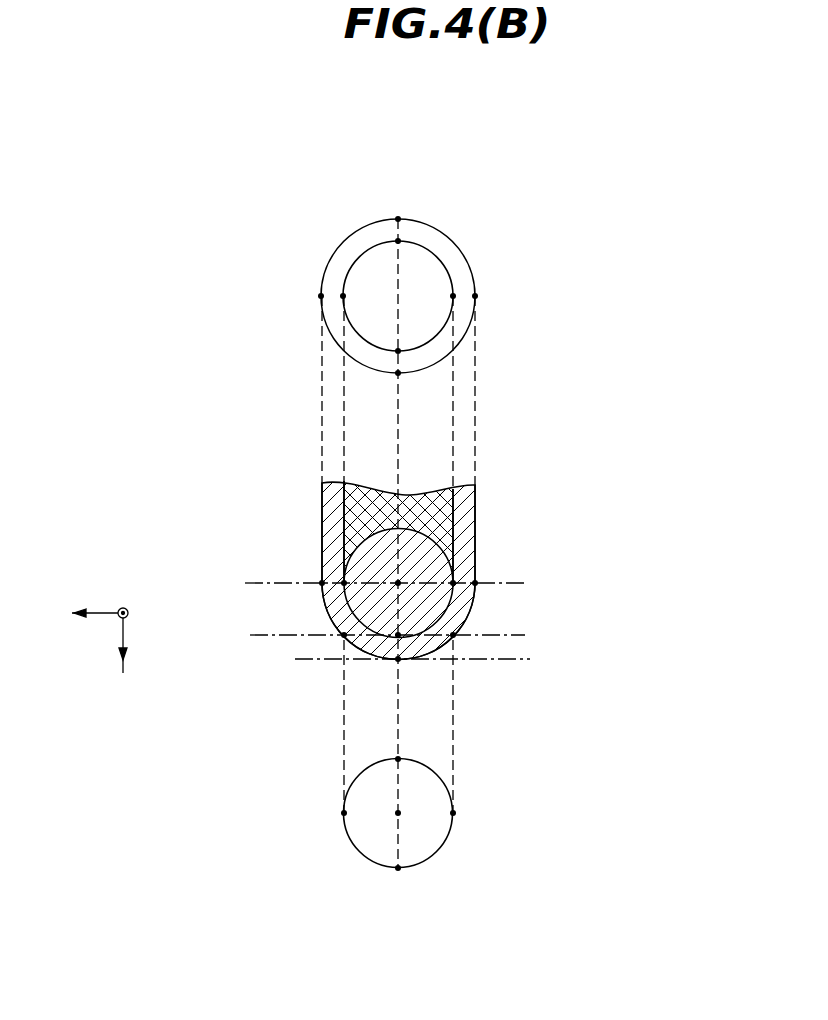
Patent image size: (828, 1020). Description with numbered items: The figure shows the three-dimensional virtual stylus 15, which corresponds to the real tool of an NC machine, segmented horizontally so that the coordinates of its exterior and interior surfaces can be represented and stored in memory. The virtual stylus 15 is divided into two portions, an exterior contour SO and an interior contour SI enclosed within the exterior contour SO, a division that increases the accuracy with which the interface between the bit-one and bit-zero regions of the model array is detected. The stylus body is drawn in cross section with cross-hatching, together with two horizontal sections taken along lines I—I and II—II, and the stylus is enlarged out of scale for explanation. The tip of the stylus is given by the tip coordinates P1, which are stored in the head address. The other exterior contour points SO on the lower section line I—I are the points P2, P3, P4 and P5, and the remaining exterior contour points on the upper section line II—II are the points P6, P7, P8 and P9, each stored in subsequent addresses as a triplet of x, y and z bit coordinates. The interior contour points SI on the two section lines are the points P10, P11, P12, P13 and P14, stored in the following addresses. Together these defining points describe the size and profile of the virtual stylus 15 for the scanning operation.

The virtual stylus 15 is at (157, 544).
The exterior contour SO is at (467, 516).
The interior contour SI is at (440, 494).
The tip coordinates P1 is at (398, 661).
The exterior contour point P2 is at (343, 637).
The exterior contour point P3 is at (399, 637).
The exterior contour point P4 is at (454, 637).
The exterior contour point P5 is at (396, 884).
The exterior contour point P6 is at (321, 581).
The exterior contour point P7 is at (397, 581).
The exterior contour point P8 is at (482, 597).
The exterior contour point P9 is at (408, 388).
The interior contour point P10 is at (384, 827).
The interior contour point P11 is at (320, 600).
The interior contour point P12 is at (413, 255).
The interior contour point P13 is at (472, 622).
The interior contour point P14 is at (413, 334).